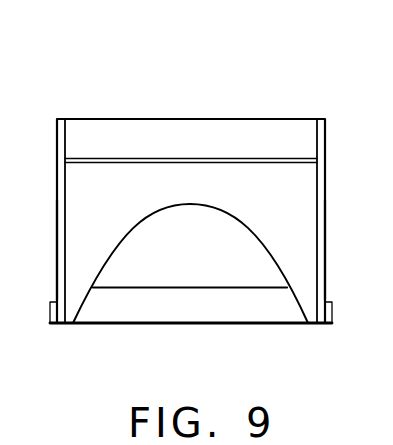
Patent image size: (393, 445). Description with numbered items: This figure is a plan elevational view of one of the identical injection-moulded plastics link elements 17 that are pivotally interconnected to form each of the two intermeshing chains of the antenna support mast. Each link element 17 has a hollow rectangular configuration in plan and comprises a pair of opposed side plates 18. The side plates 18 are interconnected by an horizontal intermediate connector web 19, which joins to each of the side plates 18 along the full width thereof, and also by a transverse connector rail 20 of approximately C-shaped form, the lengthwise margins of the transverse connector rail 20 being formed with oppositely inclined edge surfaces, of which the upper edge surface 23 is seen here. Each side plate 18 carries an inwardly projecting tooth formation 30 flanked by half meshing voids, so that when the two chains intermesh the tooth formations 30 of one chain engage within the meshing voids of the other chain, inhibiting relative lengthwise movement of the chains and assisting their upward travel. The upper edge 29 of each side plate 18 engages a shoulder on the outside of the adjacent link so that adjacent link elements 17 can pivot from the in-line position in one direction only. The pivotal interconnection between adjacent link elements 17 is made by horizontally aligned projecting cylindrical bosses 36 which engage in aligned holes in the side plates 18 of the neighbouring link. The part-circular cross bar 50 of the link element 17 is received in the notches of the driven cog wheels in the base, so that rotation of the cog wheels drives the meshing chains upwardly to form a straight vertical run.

The link element 17 is at (212, 100).
The side plate 18 is at (57, 243).
The intermediate connector web 19 is at (255, 204).
The transverse connector rail 20 is at (122, 142).
The upper edge surface 23 is at (125, 160).
The upper edge 29 is at (60, 281).
The tooth formation 30 is at (60, 143).
The cylindrical boss 36 is at (50, 325).
The cross bar 50 is at (205, 310).